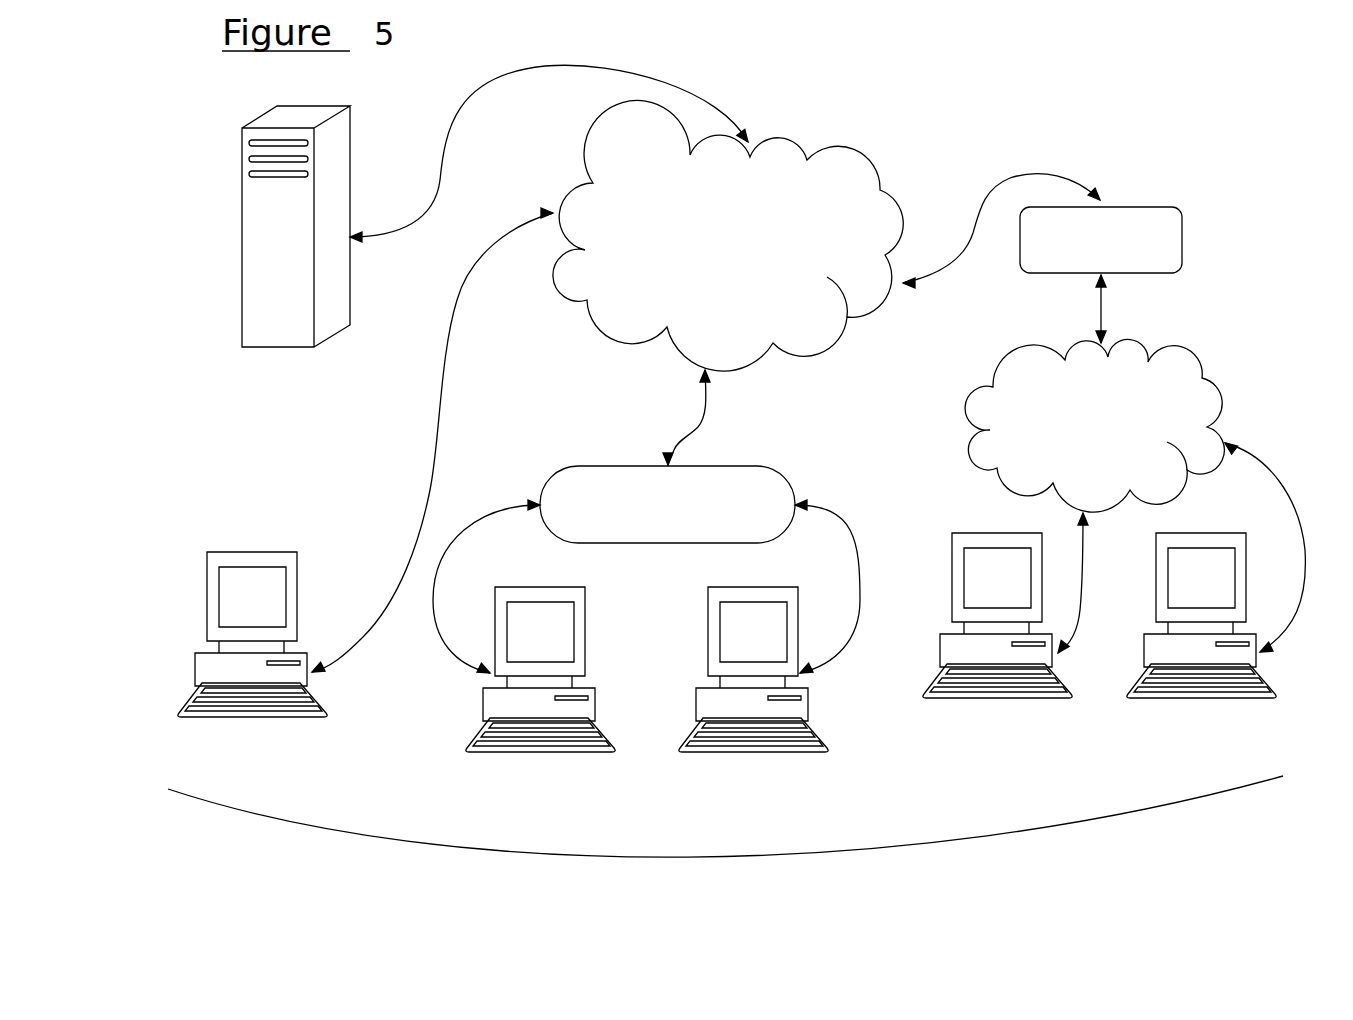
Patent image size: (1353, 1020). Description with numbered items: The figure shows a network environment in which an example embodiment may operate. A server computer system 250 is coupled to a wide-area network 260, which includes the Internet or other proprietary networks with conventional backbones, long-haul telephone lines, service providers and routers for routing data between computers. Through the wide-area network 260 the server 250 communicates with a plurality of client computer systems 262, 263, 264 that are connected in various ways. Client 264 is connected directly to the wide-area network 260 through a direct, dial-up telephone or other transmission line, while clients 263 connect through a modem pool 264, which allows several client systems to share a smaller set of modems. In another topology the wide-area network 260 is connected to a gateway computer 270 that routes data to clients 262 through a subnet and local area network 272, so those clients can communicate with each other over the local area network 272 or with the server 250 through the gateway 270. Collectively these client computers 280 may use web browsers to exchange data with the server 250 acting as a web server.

The server computer system 250 is at (242, 140).
The wide-area network 260 is at (803, 147).
The client computer systems 262 is at (985, 533).
The client computer systems 263 is at (483, 695).
The client computer system / modem pool 264 is at (633, 462).
The gateway computer 270 is at (1147, 203).
The local area network 272 is at (1173, 348).
The client computers 280 is at (725, 846).